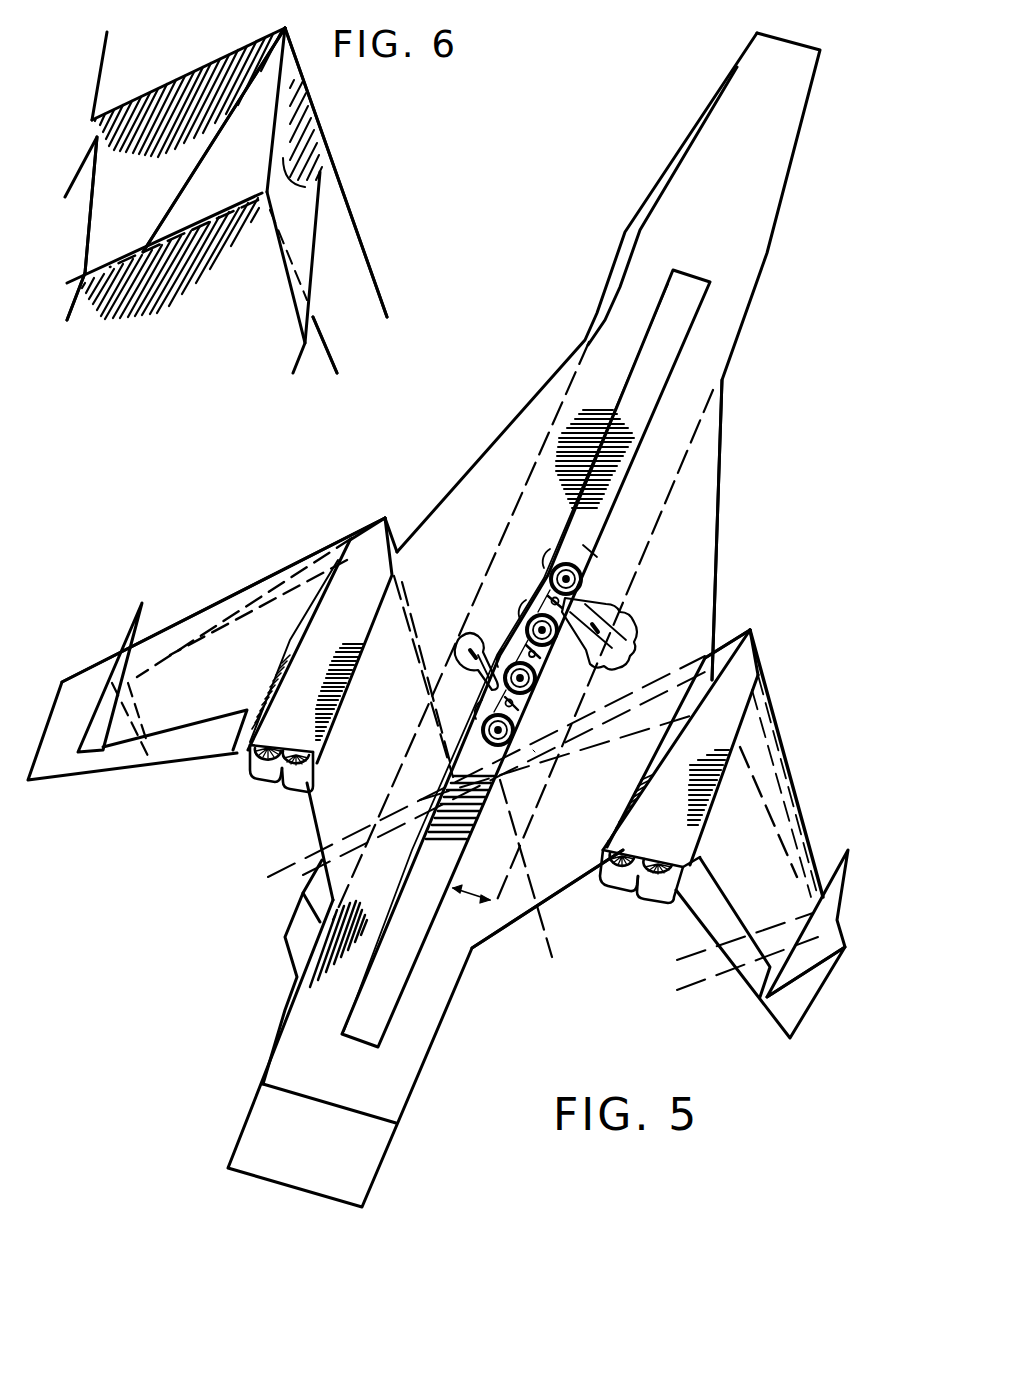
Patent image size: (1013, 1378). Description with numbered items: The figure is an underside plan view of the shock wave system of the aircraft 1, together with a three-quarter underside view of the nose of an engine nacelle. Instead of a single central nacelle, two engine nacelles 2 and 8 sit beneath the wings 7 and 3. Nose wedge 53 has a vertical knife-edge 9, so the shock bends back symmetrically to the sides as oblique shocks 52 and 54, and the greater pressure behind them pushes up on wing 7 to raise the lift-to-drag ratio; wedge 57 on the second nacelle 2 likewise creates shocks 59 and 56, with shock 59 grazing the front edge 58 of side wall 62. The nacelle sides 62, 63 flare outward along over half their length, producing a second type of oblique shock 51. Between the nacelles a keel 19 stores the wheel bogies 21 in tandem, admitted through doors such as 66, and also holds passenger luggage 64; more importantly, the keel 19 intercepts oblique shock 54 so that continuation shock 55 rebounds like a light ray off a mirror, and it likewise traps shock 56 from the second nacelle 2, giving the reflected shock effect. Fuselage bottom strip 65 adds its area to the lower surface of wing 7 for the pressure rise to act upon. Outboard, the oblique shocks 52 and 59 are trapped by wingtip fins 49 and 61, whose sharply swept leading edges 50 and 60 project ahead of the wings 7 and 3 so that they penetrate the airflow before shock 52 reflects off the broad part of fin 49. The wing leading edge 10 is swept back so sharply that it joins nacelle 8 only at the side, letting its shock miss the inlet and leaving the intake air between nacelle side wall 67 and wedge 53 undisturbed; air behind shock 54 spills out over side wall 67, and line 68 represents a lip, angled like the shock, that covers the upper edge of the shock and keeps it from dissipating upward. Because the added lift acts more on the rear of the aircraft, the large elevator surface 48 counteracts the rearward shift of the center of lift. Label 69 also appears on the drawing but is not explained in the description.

In FIG. 5, the aircraft 1 is at (613, 253).
In FIG. 5, the engine nacelle 2 is at (372, 598).
In FIG. 5, the wing 3 is at (242, 753).
In FIG. 6, the wing 7 is at (362, 240).
In FIG. 5, the wing 7 is at (570, 884).
In FIG. 6, the engine nacelle 8 is at (235, 333).
In FIG. 5, the engine nacelle 8 is at (735, 710).
In FIG. 6, the vertical knife-edge 9 is at (275, 125).
In FIG. 5, the vertical knife-edge 9 is at (748, 643).
In FIG. 6, the wing leading edge 10 is at (104, 62).
In FIG. 5, the wing leading edge 10 is at (720, 463).
In FIG. 5, the keel 19 is at (632, 480).
In FIG. 5, the wheel bogies 21 is at (527, 577).
In FIG. 5, the elevator surface 48 is at (273, 1123).
In FIG. 5, the wingtip fin 49 is at (800, 983).
In FIG. 5, the leading edge 50 is at (848, 852).
In FIG. 5, the oblique shock 51 is at (759, 787).
In FIG. 6, the oblique shock 52 is at (327, 350).
In FIG. 5, the oblique shock 52 is at (797, 830).
In FIG. 6, the nose wedge 53 is at (254, 180).
In FIG. 5, the nose wedge 53 is at (742, 636).
In FIG. 6, the oblique shock 54 is at (90, 275).
In FIG. 5, the oblique shock 54 is at (542, 745).
In FIG. 5, the continuation shock 55 is at (531, 872).
In FIG. 5, the oblique shock 56 is at (413, 628).
In FIG. 5, the wedge 57 is at (363, 527).
In FIG. 5, the front edge 58 is at (337, 557).
In FIG. 5, the oblique shock 59 is at (180, 630).
In FIG. 5, the leading edge 60 is at (142, 612).
In FIG. 5, the wingtip fin 61 is at (102, 715).
In FIG. 5, the nacelle side 62 is at (299, 650).
In FIG. 5, the nacelle side 63 is at (366, 660).
In FIG. 5, the passenger luggage 64 is at (447, 852).
In FIG. 5, the fuselage bottom strip 65 is at (468, 895).
In FIG. 5, the door 66 is at (586, 537).
In FIG. 6, the nacelle side wall 67 is at (88, 227).
In FIG. 6, the line 68 is at (191, 72).
In FIG. 6, the fold arc 69 is at (323, 177).